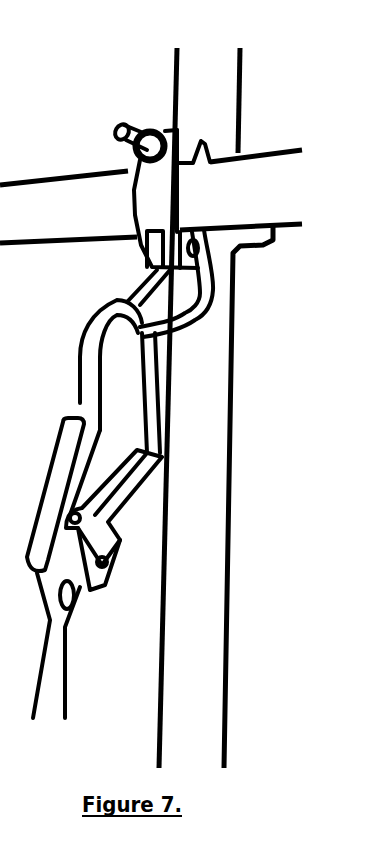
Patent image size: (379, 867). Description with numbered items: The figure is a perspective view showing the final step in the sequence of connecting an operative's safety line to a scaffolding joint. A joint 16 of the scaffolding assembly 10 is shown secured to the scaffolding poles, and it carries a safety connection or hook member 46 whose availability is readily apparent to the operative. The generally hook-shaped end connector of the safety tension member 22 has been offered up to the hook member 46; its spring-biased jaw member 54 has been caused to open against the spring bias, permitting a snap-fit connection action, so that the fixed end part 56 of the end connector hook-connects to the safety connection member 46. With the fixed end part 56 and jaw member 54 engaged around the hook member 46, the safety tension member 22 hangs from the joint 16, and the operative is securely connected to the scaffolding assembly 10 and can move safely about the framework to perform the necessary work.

The scaffolding assembly 10 is at (258, 125).
The scaffolding joint 16 is at (150, 205).
The hook member 46 is at (163, 333).
The spring-biased jaw member 54 is at (120, 527).
The fixed end part 56 is at (110, 327).
The safety tension member 22 is at (48, 700).